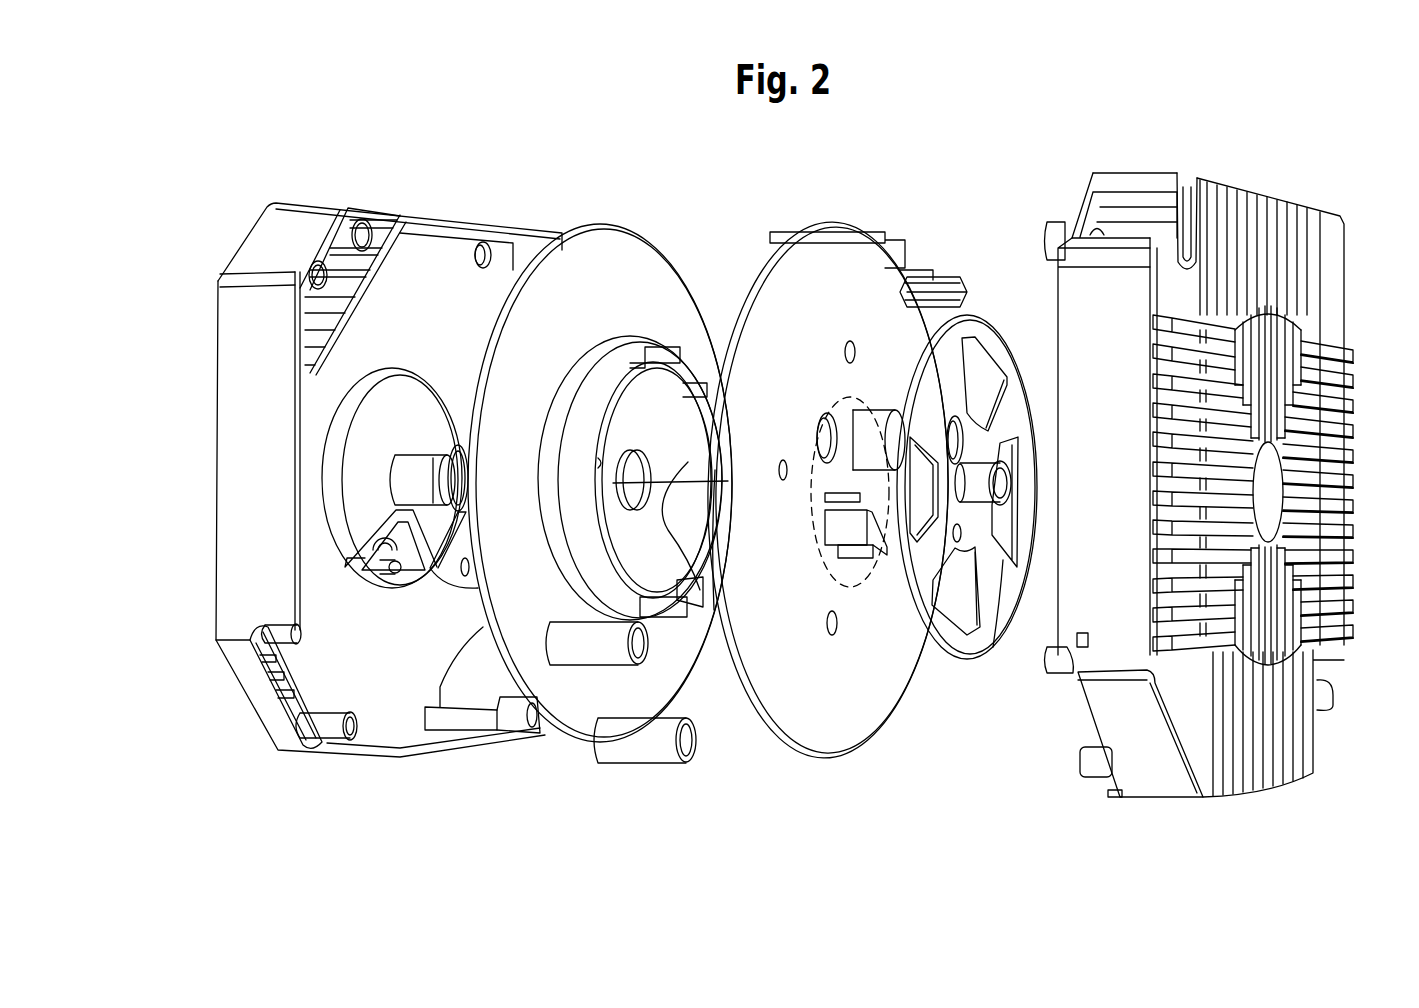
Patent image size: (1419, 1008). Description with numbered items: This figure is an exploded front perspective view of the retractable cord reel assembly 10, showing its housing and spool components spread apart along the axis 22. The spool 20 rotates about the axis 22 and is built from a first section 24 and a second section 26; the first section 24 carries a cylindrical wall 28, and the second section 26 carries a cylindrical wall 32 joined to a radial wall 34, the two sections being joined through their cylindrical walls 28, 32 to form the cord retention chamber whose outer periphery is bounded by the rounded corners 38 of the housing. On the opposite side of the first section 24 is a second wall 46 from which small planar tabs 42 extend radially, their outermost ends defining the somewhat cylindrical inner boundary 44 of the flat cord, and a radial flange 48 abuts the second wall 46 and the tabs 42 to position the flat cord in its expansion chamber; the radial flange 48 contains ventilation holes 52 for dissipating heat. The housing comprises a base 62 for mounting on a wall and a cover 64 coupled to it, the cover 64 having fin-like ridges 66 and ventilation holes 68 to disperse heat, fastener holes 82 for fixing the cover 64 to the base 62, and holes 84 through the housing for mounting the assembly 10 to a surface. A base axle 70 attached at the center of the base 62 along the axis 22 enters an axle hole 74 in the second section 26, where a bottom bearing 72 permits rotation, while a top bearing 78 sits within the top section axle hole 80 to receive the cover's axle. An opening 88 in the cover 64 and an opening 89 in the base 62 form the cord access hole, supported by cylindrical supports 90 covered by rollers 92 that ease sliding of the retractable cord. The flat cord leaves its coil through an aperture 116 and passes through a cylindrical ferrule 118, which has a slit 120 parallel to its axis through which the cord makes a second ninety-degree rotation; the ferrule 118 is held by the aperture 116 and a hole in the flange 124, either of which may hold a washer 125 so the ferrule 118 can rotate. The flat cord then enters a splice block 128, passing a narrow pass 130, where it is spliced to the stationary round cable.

The retractable cord reel assembly 10 is at (210, 147).
The spool 20 is at (714, 208).
The axis 22 is at (714, 610).
The first section 24 is at (829, 203).
The second section 26 is at (573, 208).
The cylindrical wall 28 is at (850, 228).
The cylindrical wall 32 is at (603, 340).
The radial wall 34 is at (563, 732).
The rounded corners 38 is at (437, 216).
The planar tabs 42 is at (845, 555).
The inner boundary 44 is at (860, 590).
The second wall 46 is at (830, 500).
The radial flange 48 is at (975, 640).
The ventilation holes 52 is at (960, 642).
The base 62 is at (375, 204).
The cover 64 is at (1187, 215).
The fin-like ridges 66 is at (1353, 527).
The ventilation holes 68 is at (1200, 430).
The base axle 70 is at (390, 468).
The bottom bearing 72 is at (462, 445).
The axle hole 74 is at (633, 510).
The top bearing 78 is at (1013, 502).
The top section axle hole 80 is at (993, 647).
The holes 82 is at (278, 628).
The holes 84 is at (312, 258).
The opening 88 is at (1093, 730).
The opening 89 is at (280, 703).
The cylindrical supports 90 is at (328, 730).
The rollers 92 is at (657, 767).
The aperture 116 is at (820, 423).
The cylindrical ferrule 118 is at (857, 420).
The slit 120 is at (880, 413).
The flange 124 is at (1008, 440).
The washer 125 is at (912, 442).
The splice block 128 is at (940, 272).
The narrow pass 130 is at (975, 290).